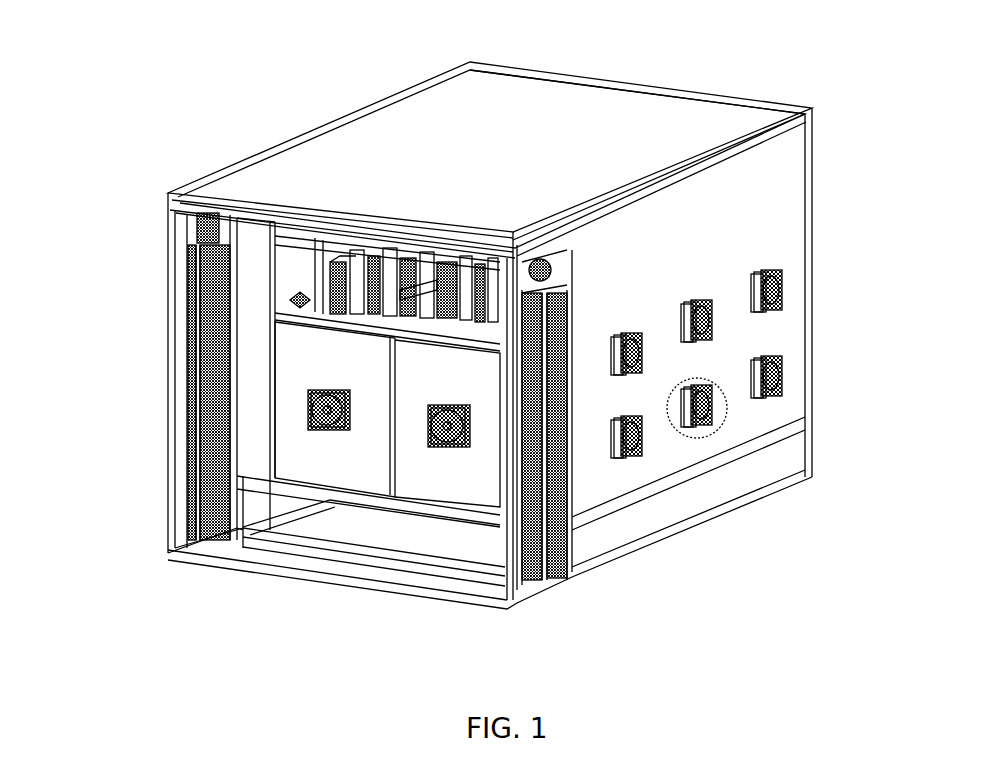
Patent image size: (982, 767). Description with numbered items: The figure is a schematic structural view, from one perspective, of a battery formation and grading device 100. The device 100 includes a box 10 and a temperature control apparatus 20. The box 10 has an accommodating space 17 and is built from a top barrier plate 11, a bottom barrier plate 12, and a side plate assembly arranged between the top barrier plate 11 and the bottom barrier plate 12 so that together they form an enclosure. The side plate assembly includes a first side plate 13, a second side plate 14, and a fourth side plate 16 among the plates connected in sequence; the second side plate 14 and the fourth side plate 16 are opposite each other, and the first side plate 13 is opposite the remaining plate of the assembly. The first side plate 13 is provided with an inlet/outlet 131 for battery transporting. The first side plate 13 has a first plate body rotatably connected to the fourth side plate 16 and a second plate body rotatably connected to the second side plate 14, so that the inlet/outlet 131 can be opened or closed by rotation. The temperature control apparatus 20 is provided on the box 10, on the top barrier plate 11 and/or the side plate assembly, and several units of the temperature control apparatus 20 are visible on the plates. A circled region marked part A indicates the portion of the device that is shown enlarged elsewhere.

The battery formation and grading device 100 is at (214, 31).
The box 10 is at (283, 140).
The top barrier plate 11 is at (442, 120).
The bottom barrier plate 12 is at (626, 556).
The first side plate 13 is at (255, 453).
The inlet/outlet 131 is at (375, 523).
The second side plate 14 is at (670, 440).
The fourth side plate 16 is at (170, 318).
The accommodating space 17 is at (330, 301).
The temperature control apparatus 20 is at (454, 447).
The part A is at (716, 428).